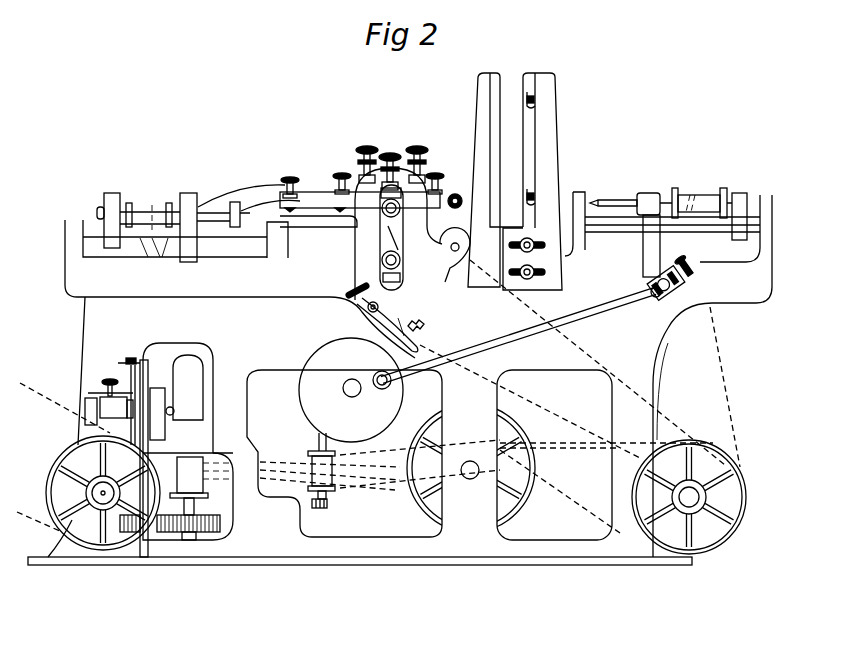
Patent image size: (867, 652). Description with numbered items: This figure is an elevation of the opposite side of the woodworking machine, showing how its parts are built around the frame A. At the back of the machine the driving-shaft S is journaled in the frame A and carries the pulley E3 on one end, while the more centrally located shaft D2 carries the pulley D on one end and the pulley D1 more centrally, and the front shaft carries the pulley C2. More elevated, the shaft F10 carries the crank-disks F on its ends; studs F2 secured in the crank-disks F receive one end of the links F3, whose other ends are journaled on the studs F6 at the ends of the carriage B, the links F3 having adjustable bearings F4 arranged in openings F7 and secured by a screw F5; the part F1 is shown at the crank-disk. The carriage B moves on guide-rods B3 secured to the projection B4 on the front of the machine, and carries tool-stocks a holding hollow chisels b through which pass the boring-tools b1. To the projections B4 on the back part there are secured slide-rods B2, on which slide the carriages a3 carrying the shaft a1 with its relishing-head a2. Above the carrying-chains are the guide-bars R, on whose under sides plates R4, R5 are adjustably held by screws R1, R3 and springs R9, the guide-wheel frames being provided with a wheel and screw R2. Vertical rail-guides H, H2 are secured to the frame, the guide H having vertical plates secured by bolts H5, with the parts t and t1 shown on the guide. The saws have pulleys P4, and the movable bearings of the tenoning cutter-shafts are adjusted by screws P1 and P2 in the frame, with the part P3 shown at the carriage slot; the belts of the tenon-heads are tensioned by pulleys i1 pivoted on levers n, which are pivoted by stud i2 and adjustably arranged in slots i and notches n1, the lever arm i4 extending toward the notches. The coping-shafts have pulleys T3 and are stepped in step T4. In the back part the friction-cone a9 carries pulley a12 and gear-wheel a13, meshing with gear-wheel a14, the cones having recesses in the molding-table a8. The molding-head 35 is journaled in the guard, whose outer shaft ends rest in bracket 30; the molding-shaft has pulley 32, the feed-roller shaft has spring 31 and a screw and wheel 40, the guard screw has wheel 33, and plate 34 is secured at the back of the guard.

The frame A is at (400, 380).
The carriage B is at (730, 253).
The slide-rods B2 is at (240, 236).
The guide-rods B3 is at (630, 230).
The projection B4 is at (75, 222).
The tool-stocks a is at (700, 196).
The shaft a1 is at (140, 213).
The relishing-head a2 is at (248, 210).
The carriages a3 is at (190, 194).
The molding-table a8 is at (188, 440).
The friction-cone a9 is at (178, 398).
The pulley a12 is at (216, 462).
The gear-wheel a13 is at (212, 518).
The gear-wheel a14 is at (149, 515).
The hollow chisels b is at (624, 204).
The boring-tools b1 is at (600, 200).
The guide-bars R is at (252, 190).
The screw R1 is at (340, 175).
The wheel and screw R2 is at (395, 154).
The screw R3 is at (438, 176).
The plate R4 is at (293, 222).
The plate R5 is at (300, 174).
The springs R9 is at (284, 211).
The screw P1 is at (372, 148).
The screw P2 is at (424, 149).
The carriage slot P3 is at (385, 226).
The pulleys P4 is at (455, 249).
The rail-guide H is at (525, 137).
The rail-guide H2 is at (486, 180).
The bolts H5 is at (526, 96).
The screw t is at (542, 242).
The screw head t1 is at (532, 243).
The crank-disks F is at (351, 390).
The crank pin F1 is at (384, 388).
The studs F2 is at (375, 375).
The links F3 is at (466, 346).
The adjustable bearings F4 is at (676, 290).
The screw F5 is at (685, 260).
The studs F6 is at (655, 298).
The openings F7 is at (658, 273).
The shaft F10 is at (343, 386).
The slots i is at (358, 287).
The pulleys i1 is at (349, 290).
The stud i2 is at (380, 307).
The lever arm i4 is at (422, 341).
The levers n is at (392, 328).
The notches n1 is at (425, 322).
The pulleys T3 is at (321, 466).
The step T4 is at (328, 504).
The pulley D is at (518, 425).
The pulley D1 is at (566, 485).
The shaft D2 is at (472, 480).
The pulley C2 is at (746, 496).
The pulley E3 is at (57, 480).
The driving-shaft S is at (104, 500).
The bracket 30 is at (87, 412).
The spring 31 is at (109, 386).
The pulley 32 is at (116, 407).
The wheel 33 is at (126, 396).
The plate 34 is at (170, 404).
The molding-head 35 is at (176, 412).
The screw and wheel 40 is at (108, 381).